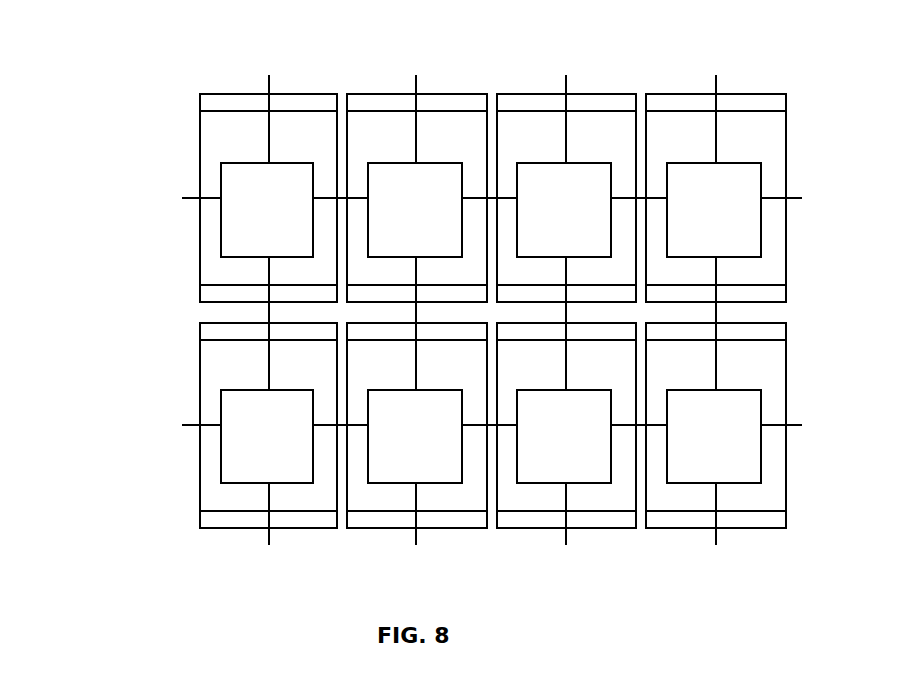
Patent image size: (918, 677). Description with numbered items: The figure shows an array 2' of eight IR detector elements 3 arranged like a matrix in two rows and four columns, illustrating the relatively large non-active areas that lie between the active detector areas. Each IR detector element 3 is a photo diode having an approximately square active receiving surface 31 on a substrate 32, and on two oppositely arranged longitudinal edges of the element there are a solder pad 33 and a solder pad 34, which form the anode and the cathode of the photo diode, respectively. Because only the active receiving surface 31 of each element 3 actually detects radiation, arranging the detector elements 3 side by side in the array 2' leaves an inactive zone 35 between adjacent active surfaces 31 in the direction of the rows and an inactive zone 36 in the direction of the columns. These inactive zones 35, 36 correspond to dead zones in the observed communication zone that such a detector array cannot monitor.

The array 2' is at (427, 291).
The IR detector element 3 is at (237, 90).
The active receiving surface 31 is at (698, 459).
The substrate 32 is at (222, 499).
The solder pad 33 is at (229, 331).
The solder pad 34 is at (433, 519).
The inactive zone 35 is at (327, 467).
The inactive zone 36 is at (243, 369).